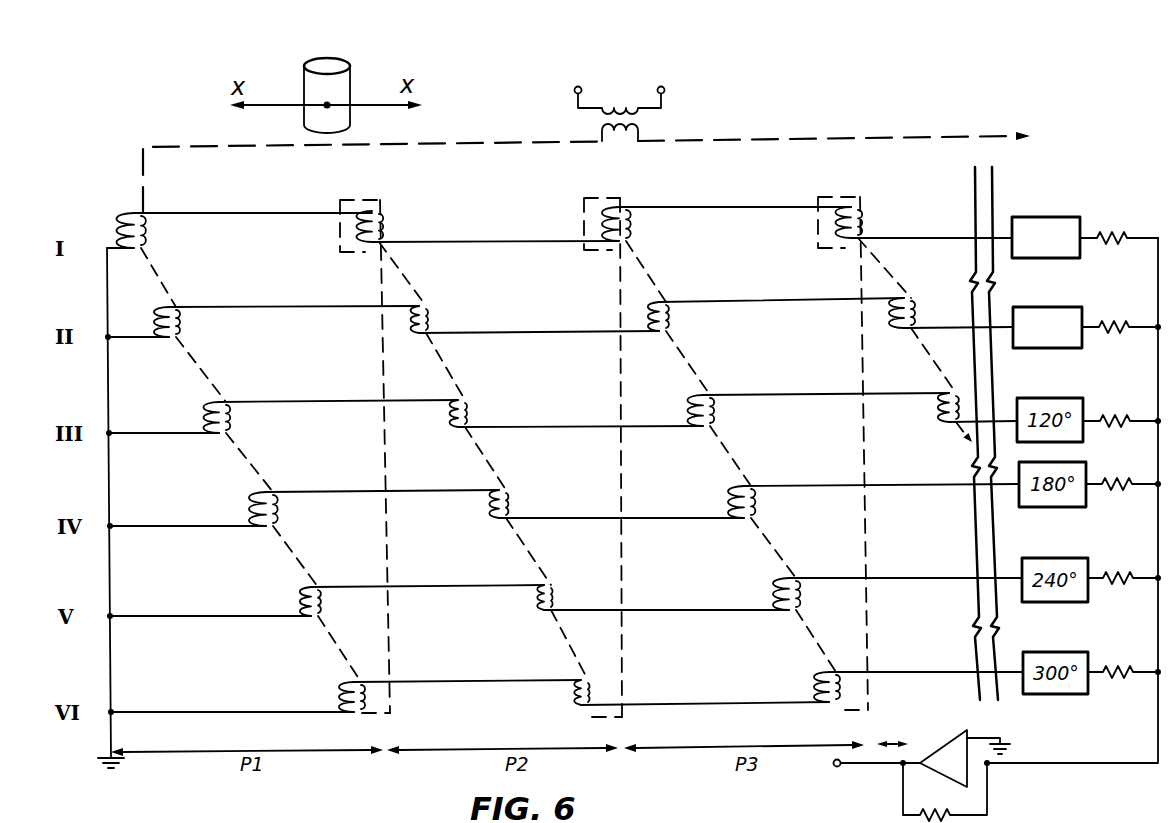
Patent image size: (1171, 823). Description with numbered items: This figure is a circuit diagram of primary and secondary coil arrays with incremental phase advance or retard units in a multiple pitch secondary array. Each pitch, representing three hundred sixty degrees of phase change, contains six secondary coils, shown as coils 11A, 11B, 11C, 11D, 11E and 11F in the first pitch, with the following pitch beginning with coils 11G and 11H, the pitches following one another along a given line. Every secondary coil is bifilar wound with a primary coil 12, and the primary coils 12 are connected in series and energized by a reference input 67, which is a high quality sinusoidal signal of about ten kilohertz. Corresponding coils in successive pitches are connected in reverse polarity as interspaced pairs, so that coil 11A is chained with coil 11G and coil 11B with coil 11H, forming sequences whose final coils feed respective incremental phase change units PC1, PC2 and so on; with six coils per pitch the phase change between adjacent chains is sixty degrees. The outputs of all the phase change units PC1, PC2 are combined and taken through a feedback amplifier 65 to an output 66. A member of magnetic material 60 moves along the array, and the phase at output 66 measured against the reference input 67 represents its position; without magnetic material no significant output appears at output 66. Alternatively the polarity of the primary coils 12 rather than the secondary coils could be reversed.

The movable magnetic element 60 is at (340, 92).
The reference input 67 is at (660, 90).
The secondary coil 11A is at (118, 218).
The secondary coil 11B is at (153, 318).
The secondary coil 11C is at (203, 420).
The secondary coil 11D is at (250, 510).
The secondary coil 11E is at (295, 600).
The secondary coil 11F is at (338, 695).
The secondary coil 11G is at (350, 252).
The secondary coil 11H is at (405, 335).
The primary coil 12 is at (146, 245).
The incremental phase change unit PC1 is at (1040, 217).
The incremental phase change unit PC2 is at (1055, 310).
The feedback amplifier 65 is at (954, 748).
The output 66 is at (837, 767).